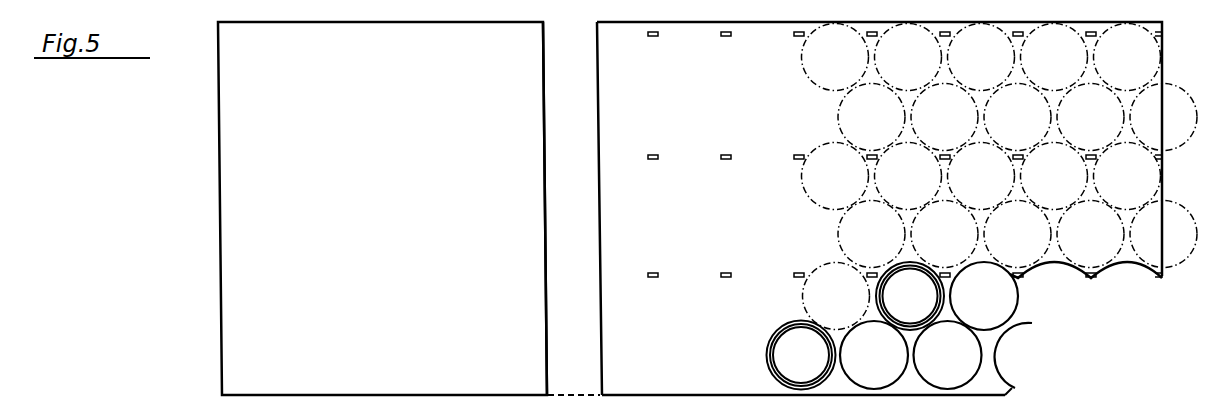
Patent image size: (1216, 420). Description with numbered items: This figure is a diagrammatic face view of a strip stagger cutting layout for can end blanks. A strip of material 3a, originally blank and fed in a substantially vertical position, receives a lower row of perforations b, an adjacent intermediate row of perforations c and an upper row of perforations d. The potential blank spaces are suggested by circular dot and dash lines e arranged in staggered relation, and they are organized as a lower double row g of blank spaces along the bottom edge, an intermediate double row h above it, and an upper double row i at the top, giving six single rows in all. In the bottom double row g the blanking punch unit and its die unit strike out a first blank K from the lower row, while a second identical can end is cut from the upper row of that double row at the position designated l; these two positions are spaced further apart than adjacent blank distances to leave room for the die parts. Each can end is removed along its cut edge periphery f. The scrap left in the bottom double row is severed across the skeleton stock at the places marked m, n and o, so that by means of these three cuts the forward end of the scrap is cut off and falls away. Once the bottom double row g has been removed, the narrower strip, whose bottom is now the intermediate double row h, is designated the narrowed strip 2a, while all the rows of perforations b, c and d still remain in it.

The strip of material 3a is at (612, 43).
The narrowed strip 2a is at (1152, 106).
The upper row of perforations d is at (719, 35).
The intermediate row of perforations c is at (719, 158).
The lower row of perforations b is at (793, 276).
The circular dot and dash lines e is at (818, 138).
The upper double row of blank spaces i is at (672, 89).
The intermediate double row of blank spaces h is at (676, 212).
The lower double row of blank spaces g is at (665, 346).
The second can end blank position l is at (910, 296).
The cut edge periphery f is at (953, 278).
The blank K is at (801, 355).
The scrap severing place m is at (1019, 279).
The scrap severing place n is at (1001, 328).
The scrap severing place o is at (1010, 389).